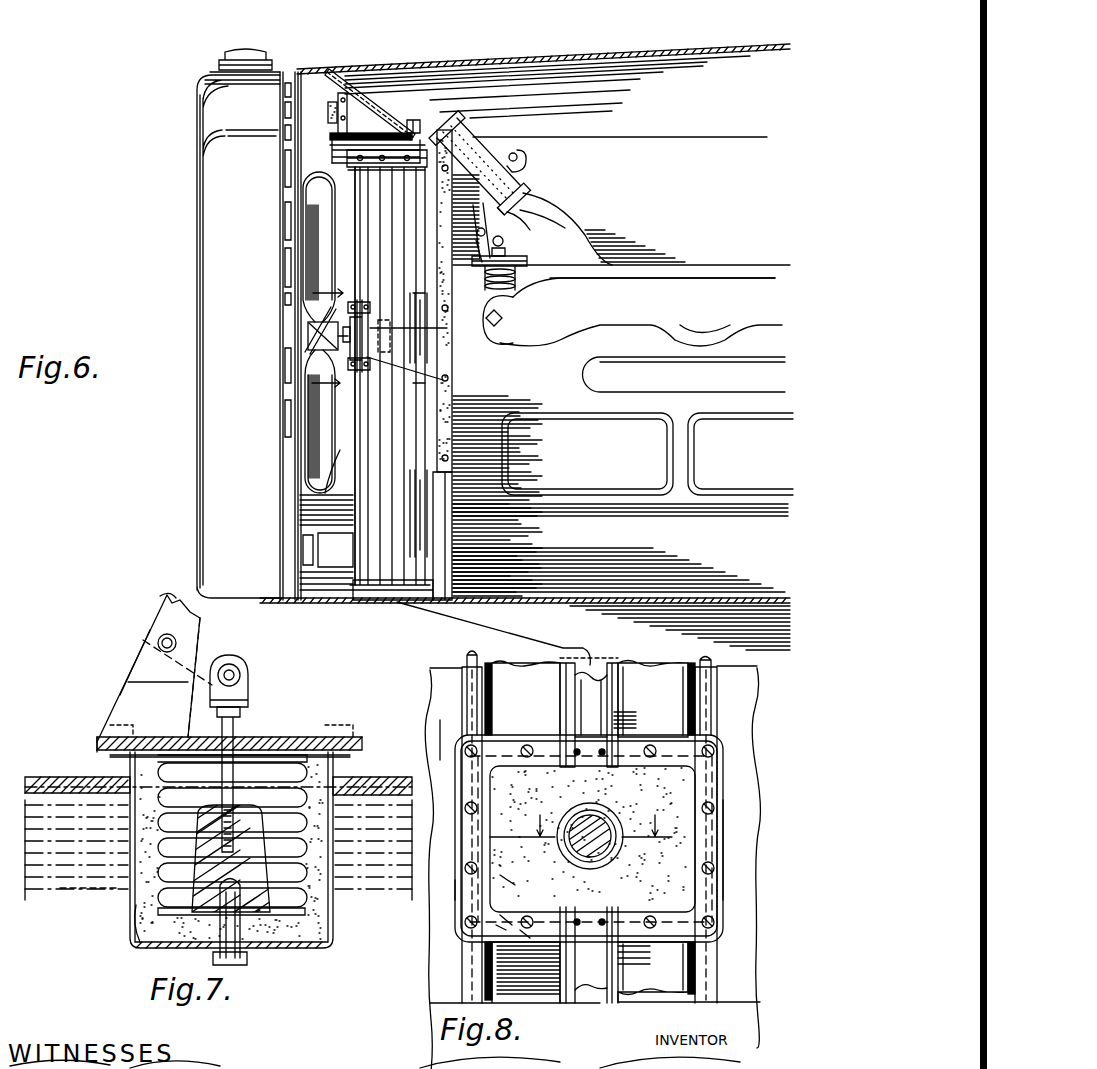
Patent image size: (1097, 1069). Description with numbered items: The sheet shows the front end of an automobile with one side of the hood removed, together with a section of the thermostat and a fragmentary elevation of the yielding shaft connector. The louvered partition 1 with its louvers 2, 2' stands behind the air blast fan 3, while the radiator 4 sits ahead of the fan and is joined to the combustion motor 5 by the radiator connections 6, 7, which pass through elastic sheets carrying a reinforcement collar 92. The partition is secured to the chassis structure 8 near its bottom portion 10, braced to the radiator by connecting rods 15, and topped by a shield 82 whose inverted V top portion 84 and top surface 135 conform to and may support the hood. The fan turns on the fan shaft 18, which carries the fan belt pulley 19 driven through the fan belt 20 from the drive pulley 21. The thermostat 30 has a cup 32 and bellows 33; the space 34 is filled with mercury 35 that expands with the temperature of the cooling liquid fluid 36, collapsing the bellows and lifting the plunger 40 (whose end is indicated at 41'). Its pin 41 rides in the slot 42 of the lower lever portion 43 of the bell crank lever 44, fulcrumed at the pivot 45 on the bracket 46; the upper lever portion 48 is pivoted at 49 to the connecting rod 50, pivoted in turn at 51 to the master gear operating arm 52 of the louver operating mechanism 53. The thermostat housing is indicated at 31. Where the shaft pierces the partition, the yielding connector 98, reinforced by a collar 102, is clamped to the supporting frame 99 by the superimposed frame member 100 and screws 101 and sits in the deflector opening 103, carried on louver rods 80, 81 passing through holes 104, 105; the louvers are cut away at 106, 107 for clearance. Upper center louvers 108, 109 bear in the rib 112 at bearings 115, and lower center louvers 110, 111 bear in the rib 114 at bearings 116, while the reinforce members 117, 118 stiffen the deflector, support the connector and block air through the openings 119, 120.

In FIG. 6, the partition 1 is at (365, 247).
In FIG. 8, the partition 1 is at (457, 697).
In FIG. 8, the louvers 2 is at (409, 733).
In FIG. 6, the louvers 2' is at (299, 376).
In FIG. 8, the louvers 2' is at (750, 857).
In FIG. 6, the air blast fan 3 is at (310, 405).
In FIG. 6, the radiator 4 is at (276, 368).
In FIG. 6, the combustion motor 5 is at (720, 267).
In FIG. 6, the radiator connection 6 is at (520, 203).
In FIG. 6, the radiator connection 7 is at (303, 558).
In FIG. 6, the chassis structure 8 is at (368, 338).
In FIG. 8, the bottom portion 10 is at (581, 816).
In FIG. 6, the connecting rods 15 is at (320, 138).
In FIG. 6, the fan shaft 18 is at (333, 332).
In FIG. 8, the fan shaft 18 is at (573, 812).
In FIG. 6, the fan belt pulley 19 is at (430, 360).
In FIG. 6, the fan belt 20 is at (510, 328).
In FIG. 6, the drive pulley 21 is at (412, 542).
In FIG. 6, the thermostat 30 is at (520, 262).
In FIG. 7, the thermostat 30 is at (275, 740).
In FIG. 7, the housing cylinder 31 is at (37, 777).
In FIG. 7, the cup 32 is at (133, 878).
In FIG. 7, the bellows 33 is at (193, 820).
In FIG. 7, the space 34 is at (133, 930).
In FIG. 7, the mercury 35 is at (167, 930).
In FIG. 7, the liquid fluid 36 is at (72, 888).
In FIG. 7, the plunger 40 is at (232, 730).
In FIG. 6, the pin 41 is at (527, 241).
In FIG. 7, the pin 41 is at (252, 677).
In FIG. 7, the plate end 41' is at (77, 720).
In FIG. 7, the slot 42 is at (232, 664).
In FIG. 7, the lower lever portion 43 is at (200, 650).
In FIG. 6, the bell crank lever 44 is at (555, 227).
In FIG. 7, the bell crank lever 44 is at (162, 607).
In FIG. 6, the pivot 45 is at (490, 235).
In FIG. 7, the pivot 45 is at (158, 642).
In FIG. 6, the bracket 46 is at (480, 235).
In FIG. 7, the bracket 46 is at (137, 667).
In FIG. 6, the upper lever portion 48 is at (508, 212).
In FIG. 7, the upper lever portion 48 is at (182, 600).
In FIG. 6, the pivotal point 49 is at (524, 158).
In FIG. 6, the connecting rod 50 is at (500, 155).
In FIG. 6, the pivotal point 51 is at (420, 125).
In FIG. 6, the master gear operating arm 52 is at (405, 132).
In FIG. 6, the louver operating mechanism 53 is at (412, 128).
In FIG. 8, the louver rod 80 is at (467, 657).
In FIG. 8, the louver rod 81 is at (712, 661).
In FIG. 6, the shield 82 is at (378, 130).
In FIG. 6, the top portion 84 is at (376, 104).
In FIG. 6, the reinforcement collar 92 is at (329, 100).
In FIG. 6, the yielding connector 98 is at (448, 380).
In FIG. 8, the yielding connector 98 is at (507, 880).
In FIG. 8, the supporting frame 99 is at (455, 888).
In FIG. 8, the superimposed frame member 100 is at (503, 927).
In FIG. 8, the screws 101 is at (527, 935).
In FIG. 8, the collar 102 is at (614, 848).
In FIG. 8, the deflector opening 103 is at (462, 840).
In FIG. 8, the hole 104 is at (467, 777).
In FIG. 8, the hole 105 is at (712, 828).
In FIG. 8, the cut away 106 is at (453, 769).
In FIG. 8, the cut away 107 is at (728, 866).
In FIG. 8, the upper center louver 108 is at (526, 698).
In FIG. 8, the upper center louver 109 is at (590, 715).
In FIG. 8, the lower center louver 110 is at (515, 973).
In FIG. 8, the lower center louver 111 is at (689, 974).
In FIG. 8, the rib 112 is at (500, 757).
In FIG. 8, the rib 114 is at (507, 922).
In FIG. 8, the bearings 115 is at (575, 753).
In FIG. 8, the bearings 116 is at (595, 942).
In FIG. 6, the upper reinforce member 117 is at (353, 208).
In FIG. 8, the upper reinforce member 117 is at (575, 663).
In FIG. 6, the lower reinforce member 118 is at (343, 456).
In FIG. 8, the lower reinforce member 118 is at (570, 1000).
In FIG. 8, the opening 119 is at (580, 705).
In FIG. 8, the opening 120 is at (632, 992).
In FIG. 6, the top surface 135 is at (335, 72).